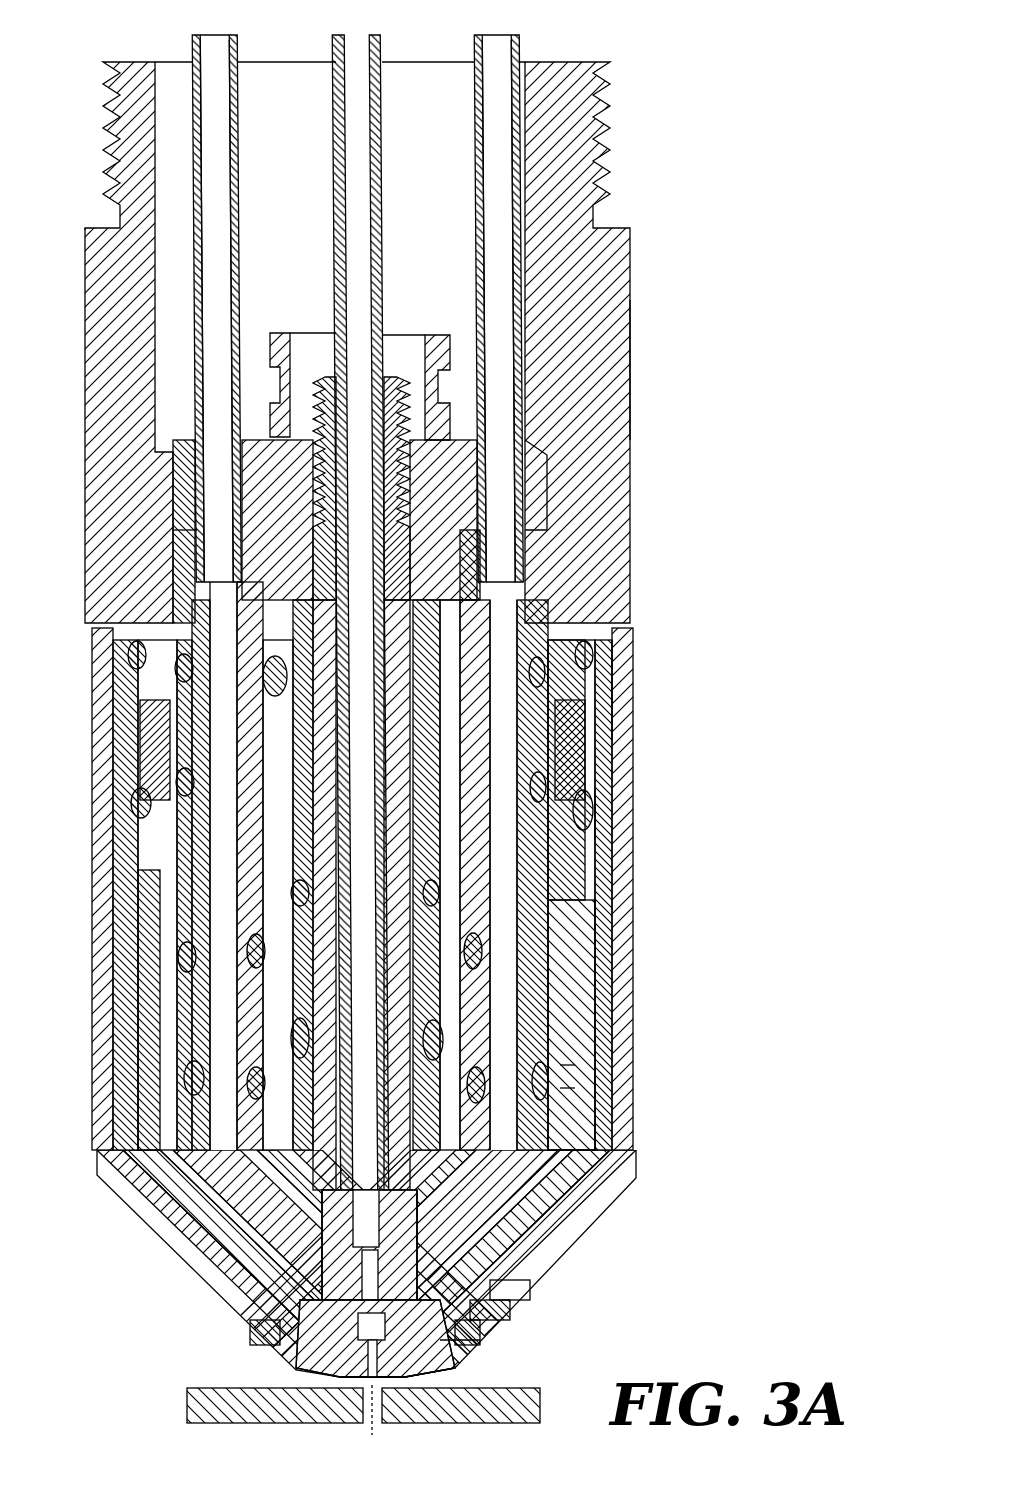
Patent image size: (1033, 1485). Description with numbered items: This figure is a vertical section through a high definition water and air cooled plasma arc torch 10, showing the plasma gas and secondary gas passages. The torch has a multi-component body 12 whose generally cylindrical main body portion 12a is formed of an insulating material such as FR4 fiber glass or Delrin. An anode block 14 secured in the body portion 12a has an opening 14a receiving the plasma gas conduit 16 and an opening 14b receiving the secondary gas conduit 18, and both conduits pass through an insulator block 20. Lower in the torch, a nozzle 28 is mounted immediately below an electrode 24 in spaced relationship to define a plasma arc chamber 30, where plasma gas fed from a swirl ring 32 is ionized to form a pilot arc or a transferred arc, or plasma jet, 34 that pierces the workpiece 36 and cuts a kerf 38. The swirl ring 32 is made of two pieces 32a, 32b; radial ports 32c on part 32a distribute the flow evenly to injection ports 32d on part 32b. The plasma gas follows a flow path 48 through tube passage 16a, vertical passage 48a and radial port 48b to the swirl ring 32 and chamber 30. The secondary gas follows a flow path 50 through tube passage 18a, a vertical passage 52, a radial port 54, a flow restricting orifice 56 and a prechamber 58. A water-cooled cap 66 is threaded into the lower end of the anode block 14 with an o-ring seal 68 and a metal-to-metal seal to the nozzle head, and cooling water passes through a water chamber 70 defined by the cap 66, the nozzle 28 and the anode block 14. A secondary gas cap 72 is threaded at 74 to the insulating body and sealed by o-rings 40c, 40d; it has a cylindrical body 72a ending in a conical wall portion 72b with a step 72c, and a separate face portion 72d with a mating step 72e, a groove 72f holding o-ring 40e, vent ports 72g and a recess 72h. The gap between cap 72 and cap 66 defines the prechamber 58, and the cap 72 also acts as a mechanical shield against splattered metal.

The plasma arc torch 10 is at (655, 172).
The multi-component body 12 is at (82, 558).
The main body portion 12a is at (630, 372).
The anode block 14 is at (620, 570).
The opening 14a is at (175, 525).
The opening 14b is at (545, 530).
The plasma gas conduit 16 is at (237, 138).
The tube passage 16a is at (214, 185).
The secondary gas conduit 18 is at (516, 135).
The tube passage 18a is at (497, 172).
The insulator block 20 is at (420, 330).
The electrode 24 is at (420, 1280).
The nozzle 28 is at (440, 1250).
The plasma arc chamber 30 is at (265, 1358).
The swirl ring 32 is at (470, 1145).
The swirl ring part 32a is at (560, 1115).
The swirl ring part 32b is at (335, 1215).
The radial ports 32c is at (560, 1165).
The injection ports 32d is at (300, 1215).
The transferred arc 34 is at (340, 1380).
The workpiece 36 is at (540, 1395).
The kerf 38 is at (370, 1430).
The o-ring 40c is at (615, 668).
The o-ring 40d is at (590, 815).
The o-ring 40e is at (225, 1310).
The plasma gas flow path 48 is at (212, 58).
The vertical passage 48a is at (220, 870).
The radial port 48b is at (245, 1152).
The secondary gas flow path 50 is at (499, 58).
The vertical passage 52 is at (510, 625).
The radial port 54 is at (545, 1010).
The flow restricting orifice 56 is at (115, 1000).
The prechamber 58 is at (200, 1200).
The water-cooled cap 66 is at (560, 1070).
The o-ring seal 68 is at (560, 1090).
The water chamber 70 is at (565, 1238).
The secondary gas cap 72 is at (600, 945).
The cylindrical body 72a is at (590, 1045).
The conical wall portion 72b is at (570, 1260).
The step 72c is at (540, 1305).
The face portion 72d is at (480, 1350).
The step 72e is at (530, 1290).
The groove 72f is at (500, 1330).
The vent ports 72g is at (275, 1335).
The recess 72h is at (460, 1370).
The threads 74 is at (625, 885).